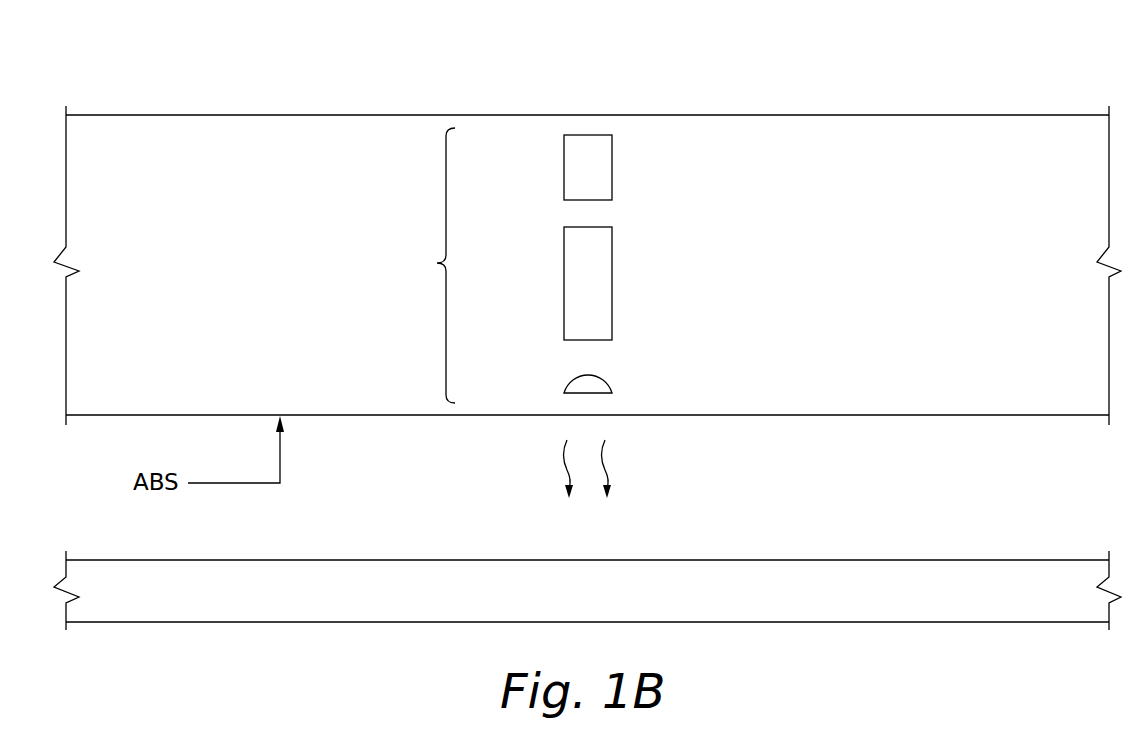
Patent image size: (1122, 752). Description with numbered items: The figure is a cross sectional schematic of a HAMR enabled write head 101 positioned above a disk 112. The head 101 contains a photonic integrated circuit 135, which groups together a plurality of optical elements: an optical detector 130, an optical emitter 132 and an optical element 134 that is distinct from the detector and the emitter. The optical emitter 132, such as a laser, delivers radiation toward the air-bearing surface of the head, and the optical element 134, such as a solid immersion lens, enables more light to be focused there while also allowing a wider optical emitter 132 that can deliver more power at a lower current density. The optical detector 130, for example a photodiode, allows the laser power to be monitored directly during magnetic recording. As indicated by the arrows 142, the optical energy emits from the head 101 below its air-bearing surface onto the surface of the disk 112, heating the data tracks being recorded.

The HAMR enabled write head 101 is at (170, 59).
The disk 112 is at (899, 622).
The optical detector 130 is at (564, 167).
The optical emitter 132 is at (564, 278).
The optical element 134 is at (566, 386).
The photonic integrated circuit 135 is at (424, 265).
The arrows 142 is at (538, 457).